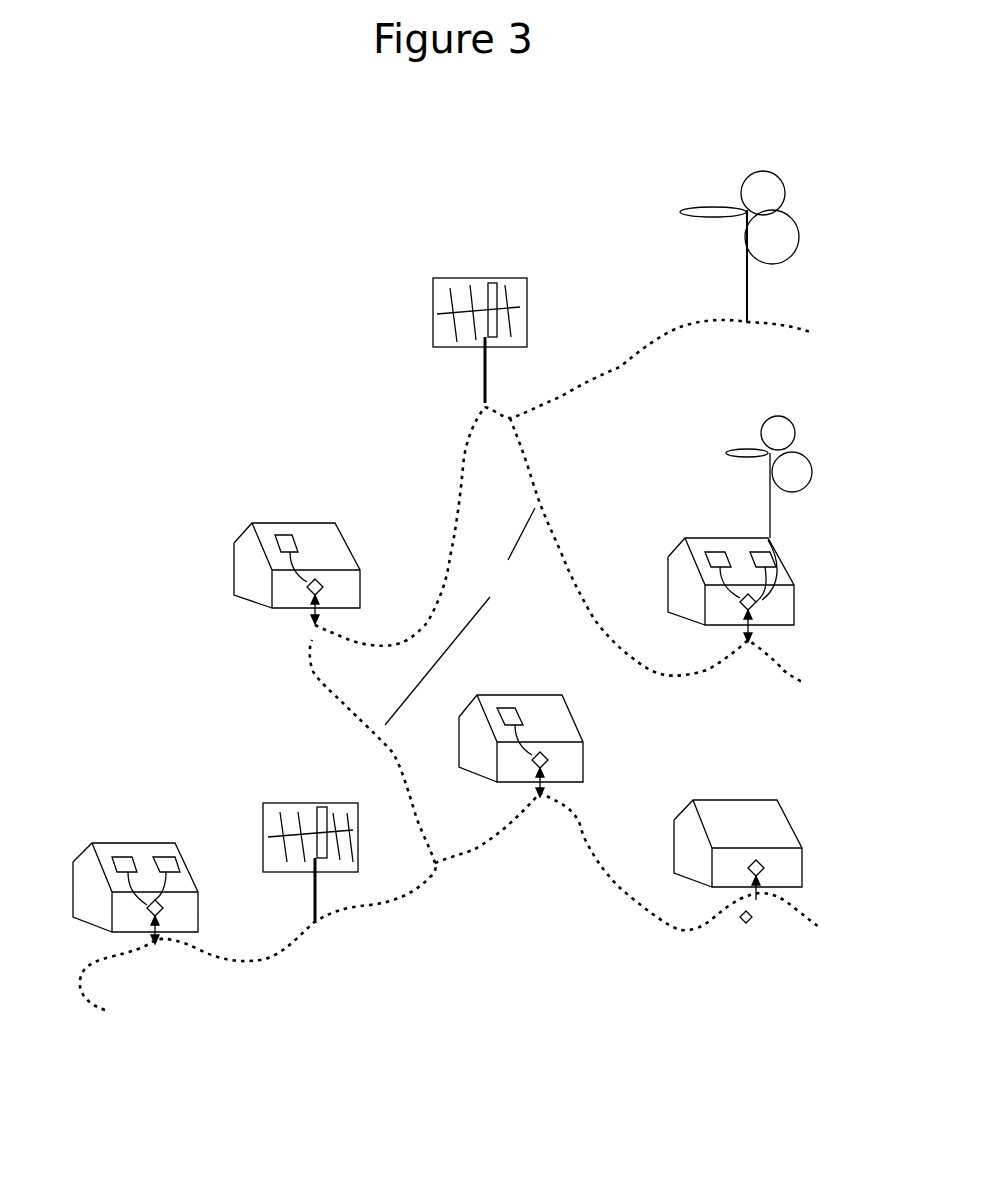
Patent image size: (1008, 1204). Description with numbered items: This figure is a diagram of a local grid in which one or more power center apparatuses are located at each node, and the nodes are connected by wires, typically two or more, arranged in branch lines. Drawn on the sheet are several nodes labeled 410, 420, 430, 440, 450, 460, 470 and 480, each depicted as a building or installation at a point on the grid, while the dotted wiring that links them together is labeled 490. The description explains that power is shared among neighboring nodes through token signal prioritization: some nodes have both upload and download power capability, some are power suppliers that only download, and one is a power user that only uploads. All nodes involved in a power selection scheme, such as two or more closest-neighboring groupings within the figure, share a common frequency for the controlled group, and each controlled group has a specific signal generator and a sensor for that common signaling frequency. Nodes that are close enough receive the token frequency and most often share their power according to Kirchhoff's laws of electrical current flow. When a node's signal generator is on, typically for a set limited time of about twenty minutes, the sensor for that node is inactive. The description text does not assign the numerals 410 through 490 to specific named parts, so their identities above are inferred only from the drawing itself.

The house with solar panels 410 is at (135, 881).
The house with solar panel 420 is at (521, 731).
The house 430 is at (738, 835).
The house with solar panels and wind turbine 440 is at (740, 529).
The house with solar panel 450 is at (297, 559).
The communication antenna 460 is at (310, 849).
The communication antenna 470 is at (480, 329).
The wind turbine 480 is at (739, 232).
The power distribution network 490 is at (447, 573).